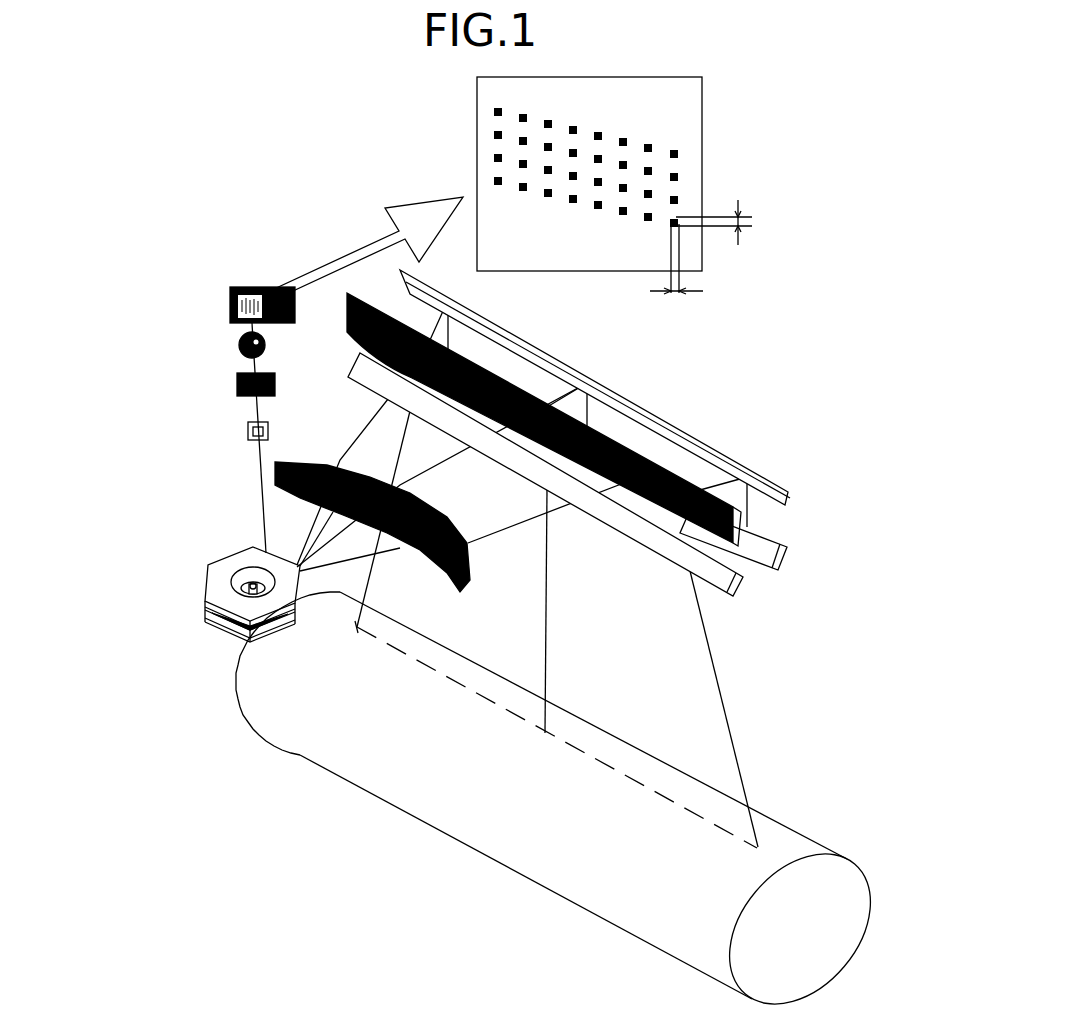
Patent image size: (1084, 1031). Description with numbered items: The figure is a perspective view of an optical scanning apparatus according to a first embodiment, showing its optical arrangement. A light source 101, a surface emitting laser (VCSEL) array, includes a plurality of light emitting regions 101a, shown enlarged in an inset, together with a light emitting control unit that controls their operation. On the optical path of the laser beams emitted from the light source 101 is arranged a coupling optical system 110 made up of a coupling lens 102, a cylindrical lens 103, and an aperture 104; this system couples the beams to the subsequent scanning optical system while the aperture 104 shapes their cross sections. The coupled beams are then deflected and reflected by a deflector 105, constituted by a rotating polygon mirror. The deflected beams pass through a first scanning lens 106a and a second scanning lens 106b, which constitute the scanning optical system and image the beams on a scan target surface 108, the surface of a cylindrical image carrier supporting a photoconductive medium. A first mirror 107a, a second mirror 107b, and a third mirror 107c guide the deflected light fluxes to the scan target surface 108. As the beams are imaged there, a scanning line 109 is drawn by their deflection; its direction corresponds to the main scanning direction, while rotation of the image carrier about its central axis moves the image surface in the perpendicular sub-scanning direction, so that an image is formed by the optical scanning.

The light source 101 is at (250, 288).
The light emitting regions 101a is at (675, 152).
The coupling lens 102 is at (239, 345).
The cylindrical lens 103 is at (238, 388).
The aperture 104 is at (208, 436).
The deflector 105 is at (222, 570).
The first scanning lens 106a is at (460, 593).
The second scanning lens 106b is at (742, 527).
The first mirror 107a is at (790, 492).
The second mirror 107b is at (790, 552).
The third mirror 107c is at (740, 592).
The scan target surface 108 is at (538, 852).
The scanning line 109 is at (592, 746).
The coupling optical system 110 is at (173, 391).